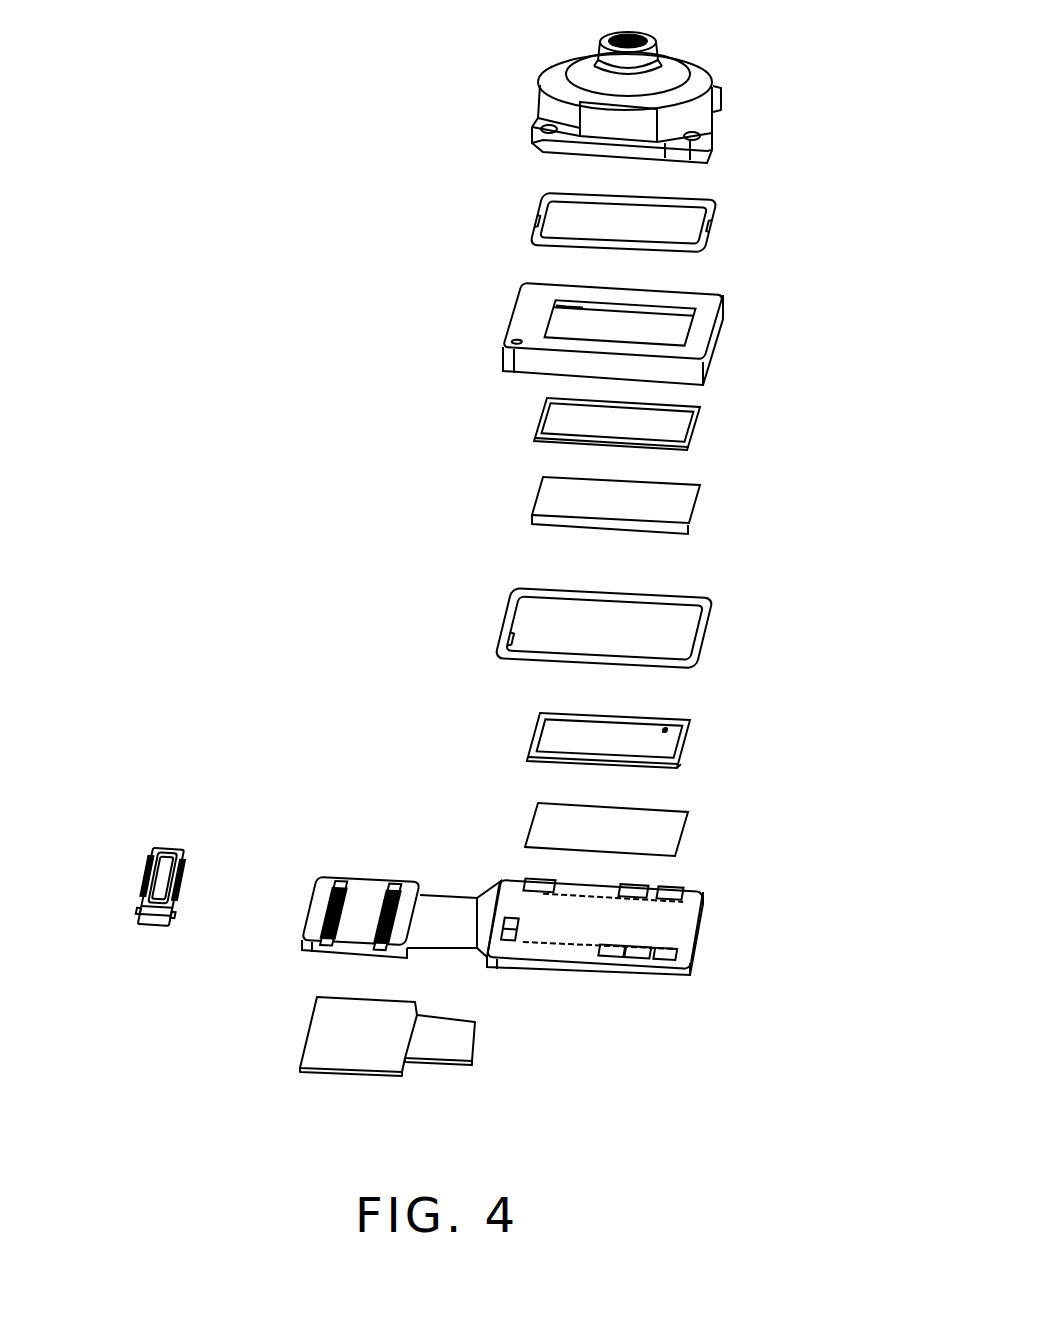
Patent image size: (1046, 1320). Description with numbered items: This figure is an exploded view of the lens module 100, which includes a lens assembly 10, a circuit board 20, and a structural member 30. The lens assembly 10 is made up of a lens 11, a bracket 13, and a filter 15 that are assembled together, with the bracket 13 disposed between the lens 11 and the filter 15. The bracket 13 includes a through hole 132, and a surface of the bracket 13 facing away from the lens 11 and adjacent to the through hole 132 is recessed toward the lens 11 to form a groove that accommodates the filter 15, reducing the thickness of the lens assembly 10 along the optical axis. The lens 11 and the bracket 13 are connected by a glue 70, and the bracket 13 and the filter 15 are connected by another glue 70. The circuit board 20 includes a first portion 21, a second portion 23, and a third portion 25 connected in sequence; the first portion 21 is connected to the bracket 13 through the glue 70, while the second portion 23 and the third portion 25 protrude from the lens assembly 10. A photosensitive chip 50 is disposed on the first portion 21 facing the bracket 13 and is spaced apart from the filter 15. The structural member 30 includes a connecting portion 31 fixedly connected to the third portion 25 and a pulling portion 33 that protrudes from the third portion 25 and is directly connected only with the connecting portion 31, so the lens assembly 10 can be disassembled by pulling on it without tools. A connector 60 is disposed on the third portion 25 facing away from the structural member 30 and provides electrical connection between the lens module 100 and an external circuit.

The lens module 100 is at (380, 31).
The lens assembly 10 is at (812, 206).
The lens 11 is at (697, 112).
The bracket 13 is at (707, 294).
The through hole 132 is at (568, 329).
The filter 15 is at (680, 495).
The glue 70 is at (545, 225).
The photosensitive chip 50 is at (672, 742).
The circuit board 20 is at (468, 813).
The first portion 21 is at (517, 892).
The second portion 23 is at (440, 910).
The third portion 25 is at (358, 892).
The structural member 30 is at (494, 1091).
The connecting portion 31 is at (370, 1055).
The pulling portion 33 is at (425, 1050).
The connector 60 is at (135, 888).